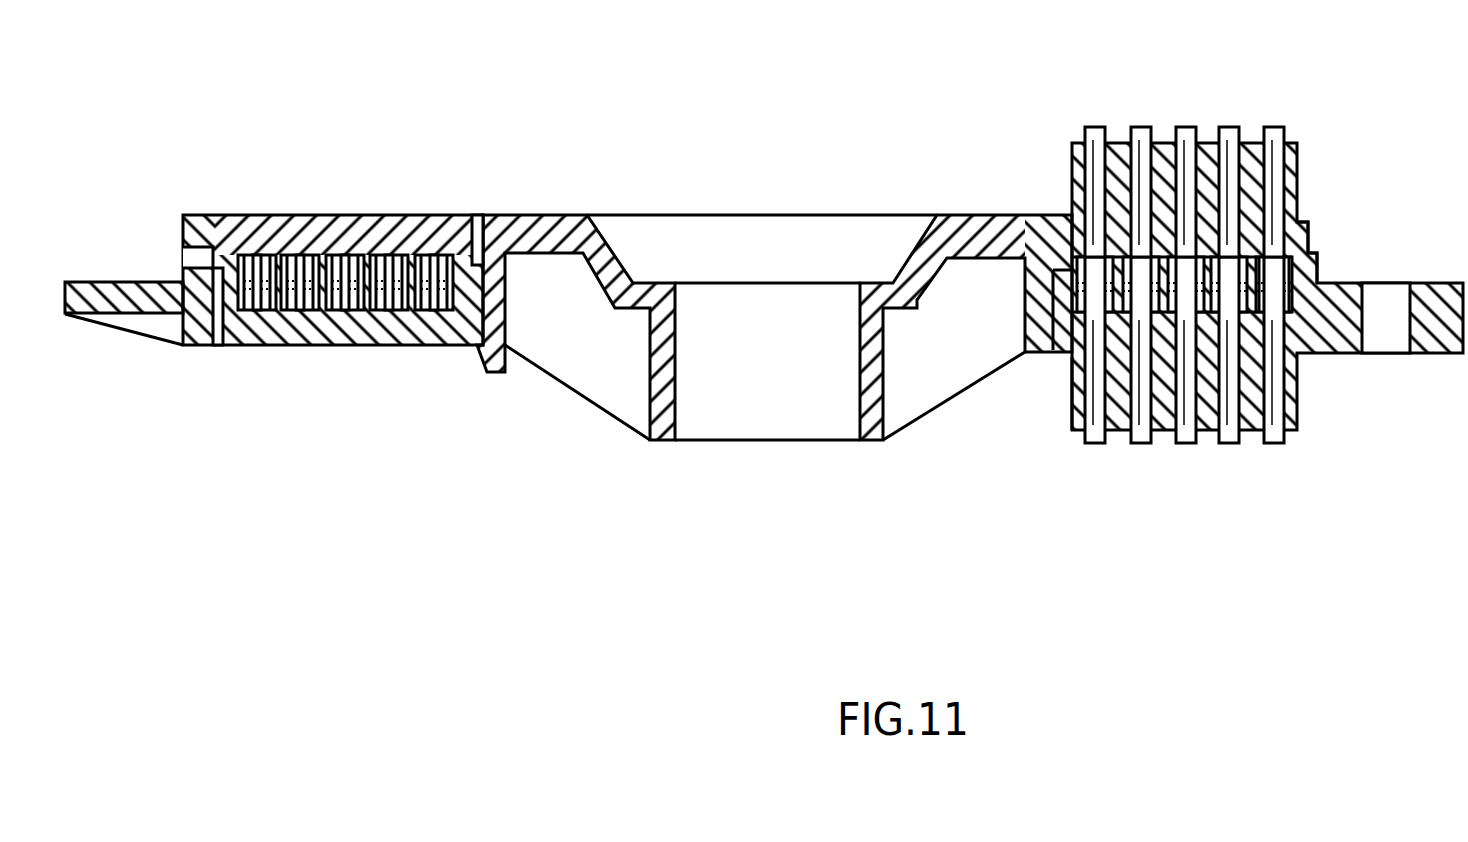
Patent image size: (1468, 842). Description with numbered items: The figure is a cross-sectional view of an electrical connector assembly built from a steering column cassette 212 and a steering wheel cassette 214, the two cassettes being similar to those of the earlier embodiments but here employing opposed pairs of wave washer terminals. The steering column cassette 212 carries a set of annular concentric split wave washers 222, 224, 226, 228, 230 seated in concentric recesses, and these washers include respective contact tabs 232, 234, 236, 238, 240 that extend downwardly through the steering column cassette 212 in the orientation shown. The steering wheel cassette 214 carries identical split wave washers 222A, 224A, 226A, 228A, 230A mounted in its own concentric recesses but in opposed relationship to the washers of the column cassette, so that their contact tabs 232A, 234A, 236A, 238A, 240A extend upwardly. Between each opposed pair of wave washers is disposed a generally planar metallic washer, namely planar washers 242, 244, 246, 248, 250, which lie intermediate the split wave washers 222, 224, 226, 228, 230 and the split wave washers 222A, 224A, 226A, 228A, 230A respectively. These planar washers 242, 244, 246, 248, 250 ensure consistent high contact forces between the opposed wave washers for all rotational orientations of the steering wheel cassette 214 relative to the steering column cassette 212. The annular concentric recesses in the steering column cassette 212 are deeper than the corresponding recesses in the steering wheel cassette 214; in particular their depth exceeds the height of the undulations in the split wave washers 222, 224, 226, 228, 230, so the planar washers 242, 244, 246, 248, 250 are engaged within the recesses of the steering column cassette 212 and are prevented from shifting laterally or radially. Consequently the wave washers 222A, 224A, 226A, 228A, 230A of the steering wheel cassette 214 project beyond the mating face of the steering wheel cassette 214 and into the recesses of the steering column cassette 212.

The steering column cassette 212 is at (1312, 390).
The steering wheel cassette 214 is at (1385, 182).
The split wave washer 222 is at (260, 310).
The split wave washer 222A is at (258, 255).
The split wave washer 224 is at (300, 310).
The split wave washer 224A is at (297, 255).
The split wave washer 226 is at (345, 310).
The split wave washer 226A is at (345, 255).
The split wave washer 228 is at (389, 310).
The split wave washer 228A is at (389, 255).
The split wave washer 230 is at (438, 310).
The split wave washer 230A is at (437, 255).
The contact tab 232 is at (1275, 446).
The contact tab 232A is at (1277, 127).
The contact tab 234 is at (1225, 446).
The contact tab 234A is at (1230, 127).
The contact tab 236 is at (1183, 446).
The contact tab 236A is at (1188, 127).
The contact tab 238 is at (1138, 446).
The contact tab 238A is at (1142, 127).
The contact tab 240 is at (1090, 446).
The contact tab 240A is at (1097, 127).
The planar metallic washer 242 is at (1313, 268).
The planar metallic washer 244 is at (1262, 268).
The planar metallic washer 246 is at (1200, 258).
The planar metallic washer 248 is at (1105, 335).
The planar metallic washer 250 is at (862, 318).